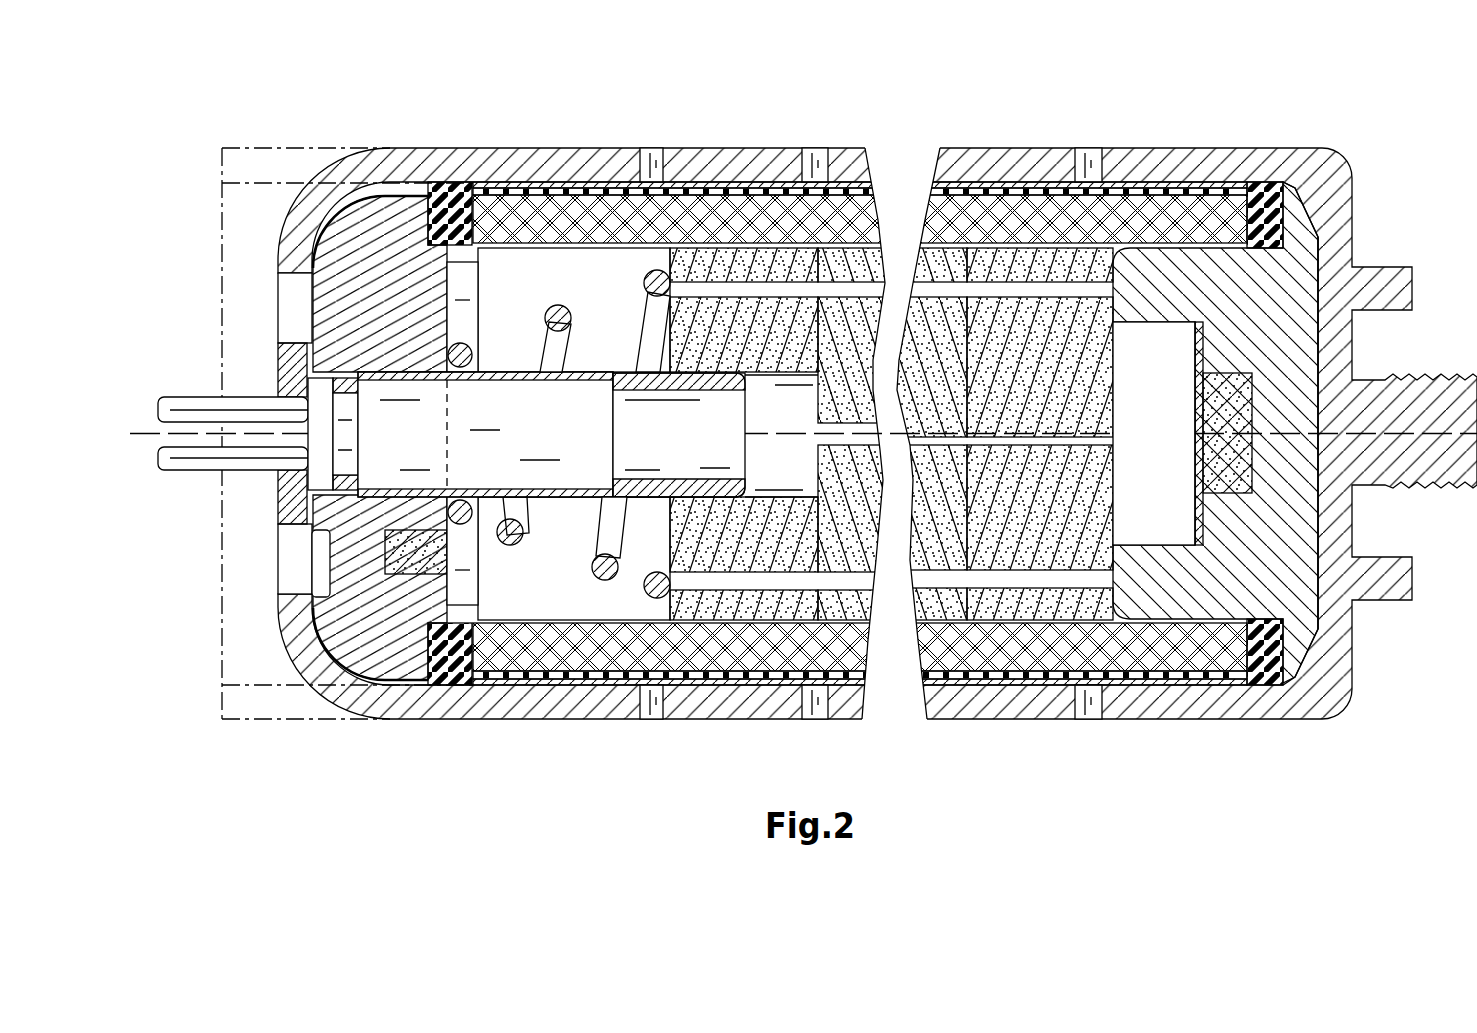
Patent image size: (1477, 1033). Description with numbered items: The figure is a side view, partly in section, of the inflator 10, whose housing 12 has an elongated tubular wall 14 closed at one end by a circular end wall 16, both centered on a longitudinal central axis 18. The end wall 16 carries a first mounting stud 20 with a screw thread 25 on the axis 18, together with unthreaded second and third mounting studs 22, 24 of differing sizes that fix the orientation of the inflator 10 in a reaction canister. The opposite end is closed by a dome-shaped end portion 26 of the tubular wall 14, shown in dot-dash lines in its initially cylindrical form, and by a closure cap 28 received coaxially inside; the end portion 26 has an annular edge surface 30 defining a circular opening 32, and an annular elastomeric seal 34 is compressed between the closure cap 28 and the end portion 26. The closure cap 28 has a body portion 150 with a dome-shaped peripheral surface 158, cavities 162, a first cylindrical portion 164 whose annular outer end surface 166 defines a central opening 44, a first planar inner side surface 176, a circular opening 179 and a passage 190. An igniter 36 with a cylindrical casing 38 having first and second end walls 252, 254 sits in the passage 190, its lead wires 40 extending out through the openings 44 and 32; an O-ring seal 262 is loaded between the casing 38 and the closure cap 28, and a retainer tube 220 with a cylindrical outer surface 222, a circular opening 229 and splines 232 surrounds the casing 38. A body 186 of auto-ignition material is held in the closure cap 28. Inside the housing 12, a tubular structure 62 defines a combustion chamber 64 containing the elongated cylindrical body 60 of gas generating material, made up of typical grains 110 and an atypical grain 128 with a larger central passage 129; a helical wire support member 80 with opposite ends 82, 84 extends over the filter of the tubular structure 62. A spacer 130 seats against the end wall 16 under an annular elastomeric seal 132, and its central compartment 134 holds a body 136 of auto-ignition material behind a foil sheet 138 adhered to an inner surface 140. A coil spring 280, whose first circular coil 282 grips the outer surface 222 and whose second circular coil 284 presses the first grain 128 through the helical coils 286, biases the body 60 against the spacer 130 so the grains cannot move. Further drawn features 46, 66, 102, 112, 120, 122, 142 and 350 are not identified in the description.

The inflator 10 is at (258, 90).
The housing 12 is at (582, 146).
The tubular body wall 14 is at (594, 158).
The end wall 16 is at (1335, 232).
The longitudinal central axis 18 is at (142, 430).
The first mounting stud 20 is at (1455, 413).
The second mounting stud 22 is at (1383, 283).
The third mounting stud 24 is at (1380, 565).
The screw thread 25 is at (1457, 490).
The end portion 26 is at (282, 160).
The closure cap 28 is at (308, 292).
The annular edge surface 30 is at (303, 276).
The circular opening 32 is at (273, 580).
The annular elastomeric seal 34 is at (456, 178).
The igniter 36 is at (297, 500).
The casing 38 is at (605, 413).
The lead wires 40 is at (203, 457).
The circular opening 44 is at (277, 425).
The housing slots 46 is at (660, 146).
The elongated cylindrical body 60 is at (745, 212).
The tubular structure 62 is at (790, 255).
The combustion chamber 64 is at (870, 338).
The shield braid 66 is at (1048, 210).
The support member 80 is at (990, 180).
The end of support member 82 is at (485, 200).
The end of support member 84 is at (1222, 193).
The housing segment 102 is at (972, 178).
The typical grains 110 is at (772, 600).
The insulator section 112 is at (695, 622).
The dielectric insert 120 is at (777, 293).
The dielectric section 122 is at (1020, 289).
The atypical grain 128 is at (700, 600).
The central passage 129 is at (809, 382).
The spacer 130 is at (1322, 340).
The annular elastomeric seal 132 is at (1258, 180).
The compartment 134 is at (1195, 250).
The body of auto-ignition material 136 is at (1227, 473).
The sheet 138 is at (1200, 337).
The inner surface 140 is at (1200, 357).
The dielectric block 142 is at (1114, 385).
The body portion 150 is at (365, 243).
The peripheral surface 158 is at (320, 160).
The cavities 162 is at (312, 563).
The first cylindrical portion 164 is at (295, 343).
The annular outer end surface 166 is at (287, 363).
The first planar inner side surface 176 is at (480, 270).
The circular opening 179 is at (455, 398).
The body of auto-ignition material 186 is at (476, 580).
The passage 190 is at (423, 421).
The retainer tube 220 is at (587, 370).
The cylindrical outer surface 222 is at (493, 370).
The circular opening 229 is at (738, 452).
The splines 232 is at (470, 530).
The first end wall 252 is at (283, 458).
The second end wall 254 is at (620, 442).
The O-ring seal 262 is at (348, 380).
The spring 280 is at (605, 582).
The first circular coil 282 is at (460, 343).
The second circular coil 284 is at (645, 278).
The helical coils 286 is at (600, 300).
The housing wall section 350 is at (618, 180).